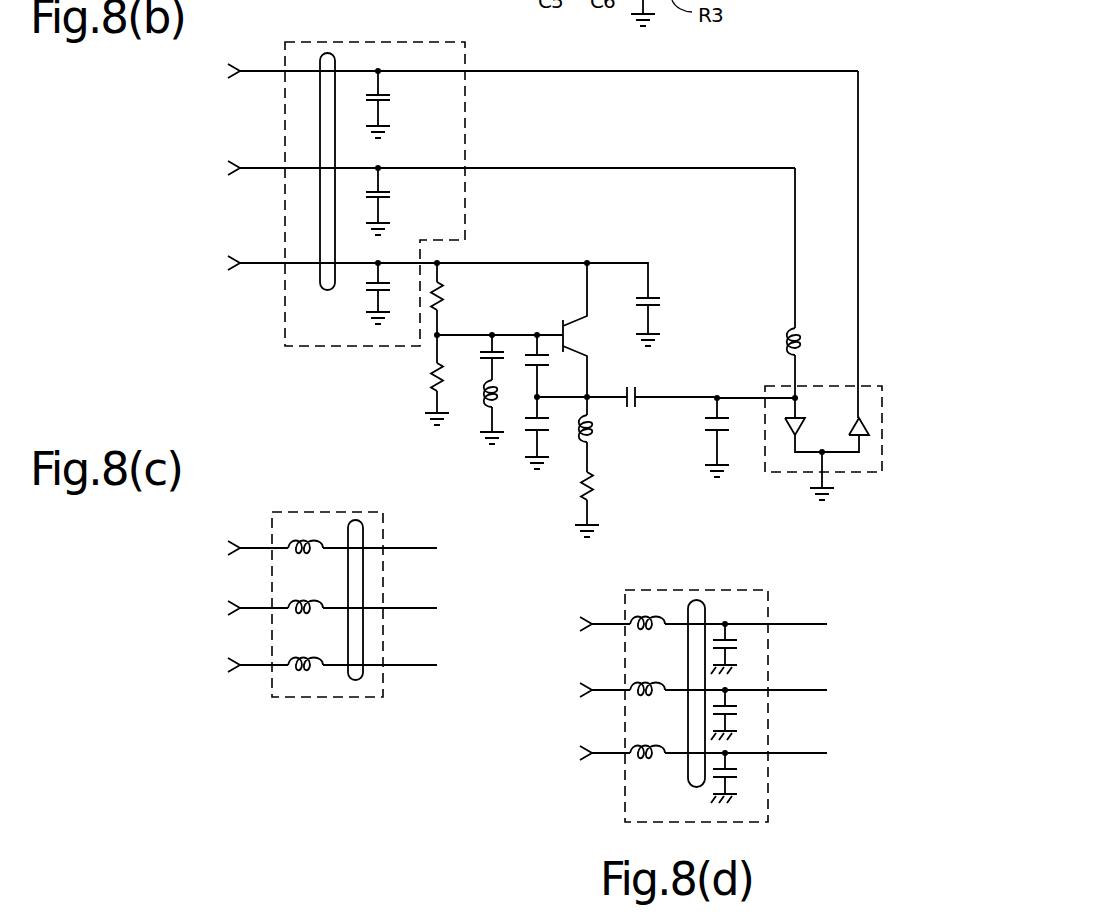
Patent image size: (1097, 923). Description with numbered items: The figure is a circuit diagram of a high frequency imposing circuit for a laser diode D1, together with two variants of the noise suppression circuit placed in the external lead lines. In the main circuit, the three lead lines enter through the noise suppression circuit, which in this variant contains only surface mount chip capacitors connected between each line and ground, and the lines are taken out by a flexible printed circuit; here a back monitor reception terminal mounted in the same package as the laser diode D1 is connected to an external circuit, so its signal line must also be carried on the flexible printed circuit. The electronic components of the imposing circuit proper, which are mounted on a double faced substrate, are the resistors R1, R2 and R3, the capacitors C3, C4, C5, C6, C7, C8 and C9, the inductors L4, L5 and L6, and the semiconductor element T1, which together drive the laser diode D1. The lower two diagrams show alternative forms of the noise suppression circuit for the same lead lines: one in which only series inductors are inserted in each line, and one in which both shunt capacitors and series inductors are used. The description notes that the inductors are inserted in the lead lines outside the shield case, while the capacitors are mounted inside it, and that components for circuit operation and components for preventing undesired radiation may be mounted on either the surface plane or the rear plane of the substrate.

The capacitor C3 is at (370, 287).
The capacitor C4 is at (476, 365).
The capacitor C5 is at (528, 370).
The capacitor C6 is at (546, 425).
The capacitor C7 is at (660, 302).
The capacitor C8 is at (640, 392).
The capacitor C9 is at (708, 422).
The resistor R1 is at (448, 292).
The resistor R2 is at (432, 375).
The resistor R3 is at (598, 485).
The inductor L4 is at (489, 395).
The inductor L5 is at (598, 430).
The inductor L6 is at (788, 340).
The semiconductor element T1 is at (560, 320).
The laser diode D1 is at (823, 428).